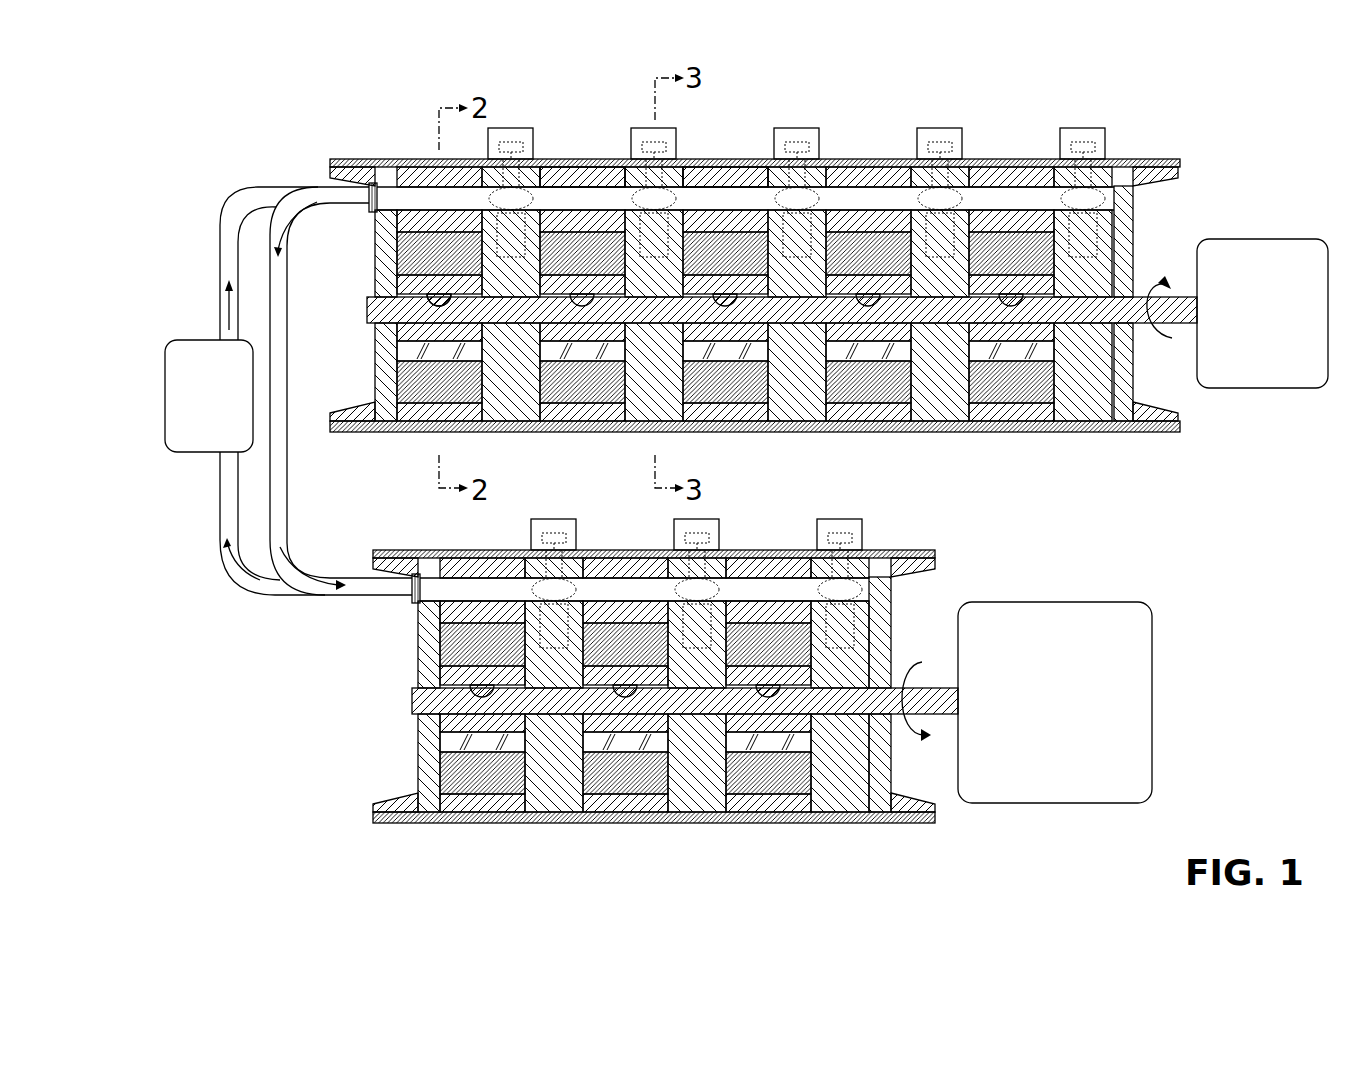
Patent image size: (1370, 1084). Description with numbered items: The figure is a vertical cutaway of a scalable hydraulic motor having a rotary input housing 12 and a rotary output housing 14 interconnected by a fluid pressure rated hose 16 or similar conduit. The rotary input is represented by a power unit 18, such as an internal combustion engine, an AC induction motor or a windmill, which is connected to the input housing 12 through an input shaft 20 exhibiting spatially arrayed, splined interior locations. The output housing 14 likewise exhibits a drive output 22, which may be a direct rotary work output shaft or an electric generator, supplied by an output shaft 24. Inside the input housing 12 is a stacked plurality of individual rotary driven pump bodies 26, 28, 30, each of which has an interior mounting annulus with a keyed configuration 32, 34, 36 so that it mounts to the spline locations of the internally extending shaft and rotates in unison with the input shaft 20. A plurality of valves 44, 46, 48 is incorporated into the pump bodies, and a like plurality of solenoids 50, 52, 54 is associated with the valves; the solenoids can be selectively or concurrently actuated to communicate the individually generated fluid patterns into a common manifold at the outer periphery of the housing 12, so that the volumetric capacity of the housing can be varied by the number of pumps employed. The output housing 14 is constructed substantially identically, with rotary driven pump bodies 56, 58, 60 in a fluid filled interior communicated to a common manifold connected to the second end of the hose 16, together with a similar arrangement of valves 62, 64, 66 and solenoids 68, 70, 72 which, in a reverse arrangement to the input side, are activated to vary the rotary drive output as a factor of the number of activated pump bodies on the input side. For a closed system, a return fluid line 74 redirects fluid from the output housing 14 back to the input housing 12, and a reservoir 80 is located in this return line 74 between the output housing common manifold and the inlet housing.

The input housing 12 is at (763, 270).
The output housing 14 is at (665, 692).
The hose 16 is at (283, 328).
The power unit 18 is at (1260, 255).
The input shaft 20 is at (1185, 326).
The drive output 22 is at (1055, 620).
The output shaft 24 is at (943, 688).
The pump body 26 is at (416, 160).
The pump body 28 is at (567, 160).
The pump body 30 is at (730, 168).
The keyed mounting annulus 32 is at (437, 292).
The keyed mounting annulus 34 is at (555, 298).
The keyed mounting annulus 36 is at (778, 215).
The valve 44 is at (650, 402).
The valve 46 is at (800, 410).
The valve 48 is at (942, 410).
The solenoid 50 is at (645, 128).
The solenoid 52 is at (805, 128).
The solenoid 54 is at (948, 128).
The pump body 56 is at (485, 800).
The pump body 58 is at (640, 800).
The pump body 60 is at (765, 800).
The valve 62 is at (555, 795).
The valve 64 is at (690, 795).
The valve 66 is at (843, 795).
The solenoid 68 is at (570, 518).
The solenoid 70 is at (712, 518).
The solenoid 72 is at (852, 518).
The return fluid line 74 is at (222, 502).
The reservoir 80 is at (186, 350).